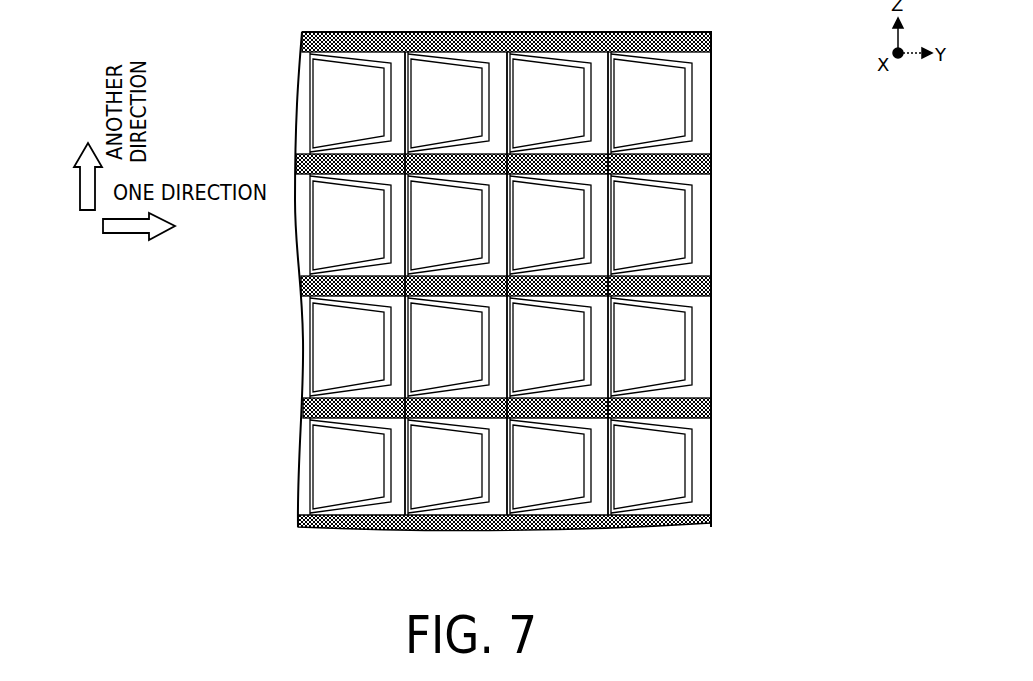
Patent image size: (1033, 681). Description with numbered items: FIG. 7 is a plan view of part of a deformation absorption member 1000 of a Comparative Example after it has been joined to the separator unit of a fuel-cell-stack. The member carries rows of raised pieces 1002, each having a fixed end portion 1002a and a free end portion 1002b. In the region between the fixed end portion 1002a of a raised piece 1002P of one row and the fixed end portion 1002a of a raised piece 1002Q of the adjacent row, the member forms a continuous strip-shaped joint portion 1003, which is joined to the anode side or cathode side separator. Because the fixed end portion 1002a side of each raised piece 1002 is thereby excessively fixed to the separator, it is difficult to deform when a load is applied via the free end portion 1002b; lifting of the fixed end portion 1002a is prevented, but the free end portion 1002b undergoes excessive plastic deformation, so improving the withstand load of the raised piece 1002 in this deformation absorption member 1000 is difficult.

The deformation absorption member 1000 is at (303, 311).
The raised piece 1002 is at (553, 492).
The fixed end portion 1002a is at (508, 468).
The free end portion 1002b is at (592, 472).
The raised piece of one row 1002P is at (380, 345).
The raised piece of another row 1002Q is at (380, 223).
The joint portion 1003 is at (700, 276).